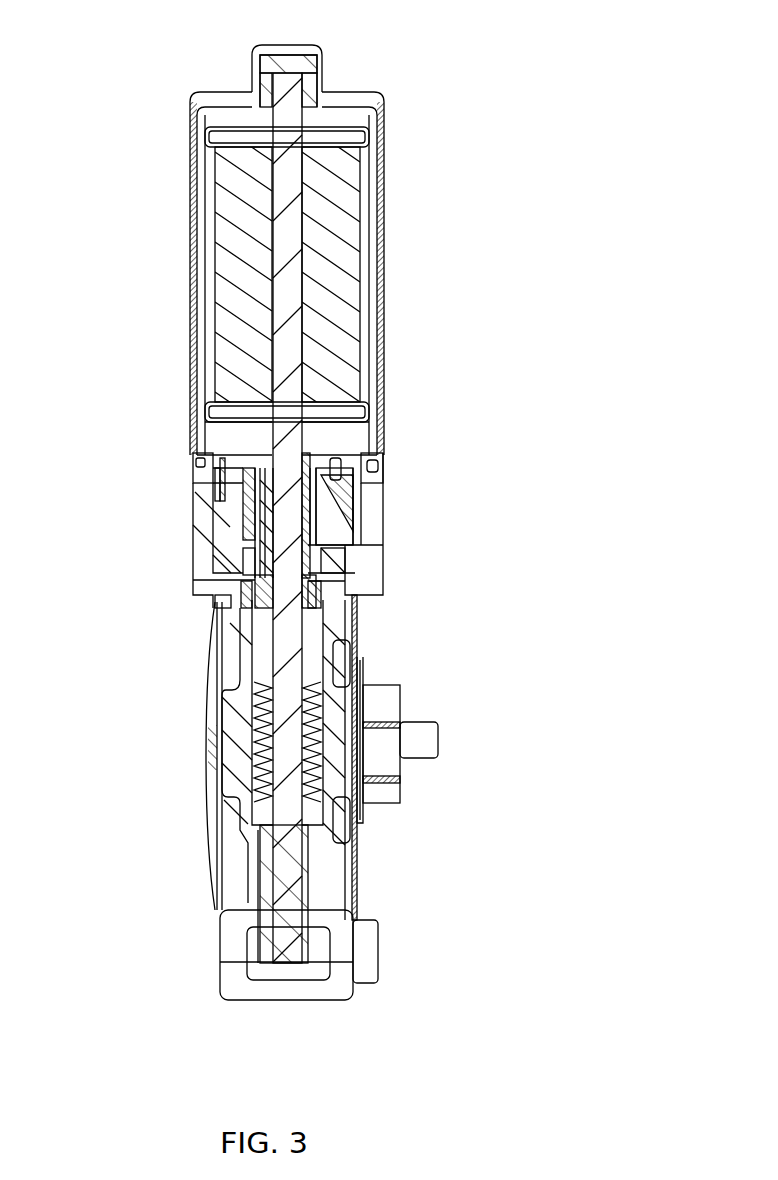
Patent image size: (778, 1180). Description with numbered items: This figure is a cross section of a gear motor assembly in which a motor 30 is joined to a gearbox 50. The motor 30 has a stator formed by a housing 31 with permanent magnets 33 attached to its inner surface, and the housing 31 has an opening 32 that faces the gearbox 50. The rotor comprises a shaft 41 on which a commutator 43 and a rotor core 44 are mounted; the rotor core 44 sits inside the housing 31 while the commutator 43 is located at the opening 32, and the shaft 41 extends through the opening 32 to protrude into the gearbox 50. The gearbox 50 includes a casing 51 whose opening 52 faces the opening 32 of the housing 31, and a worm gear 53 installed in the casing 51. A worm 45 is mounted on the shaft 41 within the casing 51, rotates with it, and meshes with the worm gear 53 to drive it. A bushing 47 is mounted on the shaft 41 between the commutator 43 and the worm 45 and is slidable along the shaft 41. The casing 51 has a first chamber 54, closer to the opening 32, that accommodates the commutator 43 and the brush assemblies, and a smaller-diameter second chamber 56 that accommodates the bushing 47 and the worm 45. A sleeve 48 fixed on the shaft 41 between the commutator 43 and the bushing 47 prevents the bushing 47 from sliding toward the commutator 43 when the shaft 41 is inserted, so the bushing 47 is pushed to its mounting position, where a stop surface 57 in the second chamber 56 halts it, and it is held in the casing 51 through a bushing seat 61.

The motor 30 is at (150, 122).
The housing 31 is at (195, 260).
The opening 32 is at (235, 460).
The permanent magnets 33 is at (341, 140).
The shaft 41 is at (285, 190).
The commutator 43 is at (255, 491).
The rotor core 44 is at (340, 325).
The worm 45 is at (262, 768).
The bushing 47 is at (270, 580).
The sleeve 48 is at (345, 556).
The gearbox 50 is at (152, 865).
The casing 51 is at (355, 527).
The opening 52 is at (368, 470).
The worm gear 53 is at (380, 803).
The first chamber 54 is at (357, 512).
The second chamber 56 is at (313, 652).
The stop surface 57 is at (250, 594).
The bushing seat 61 is at (308, 618).